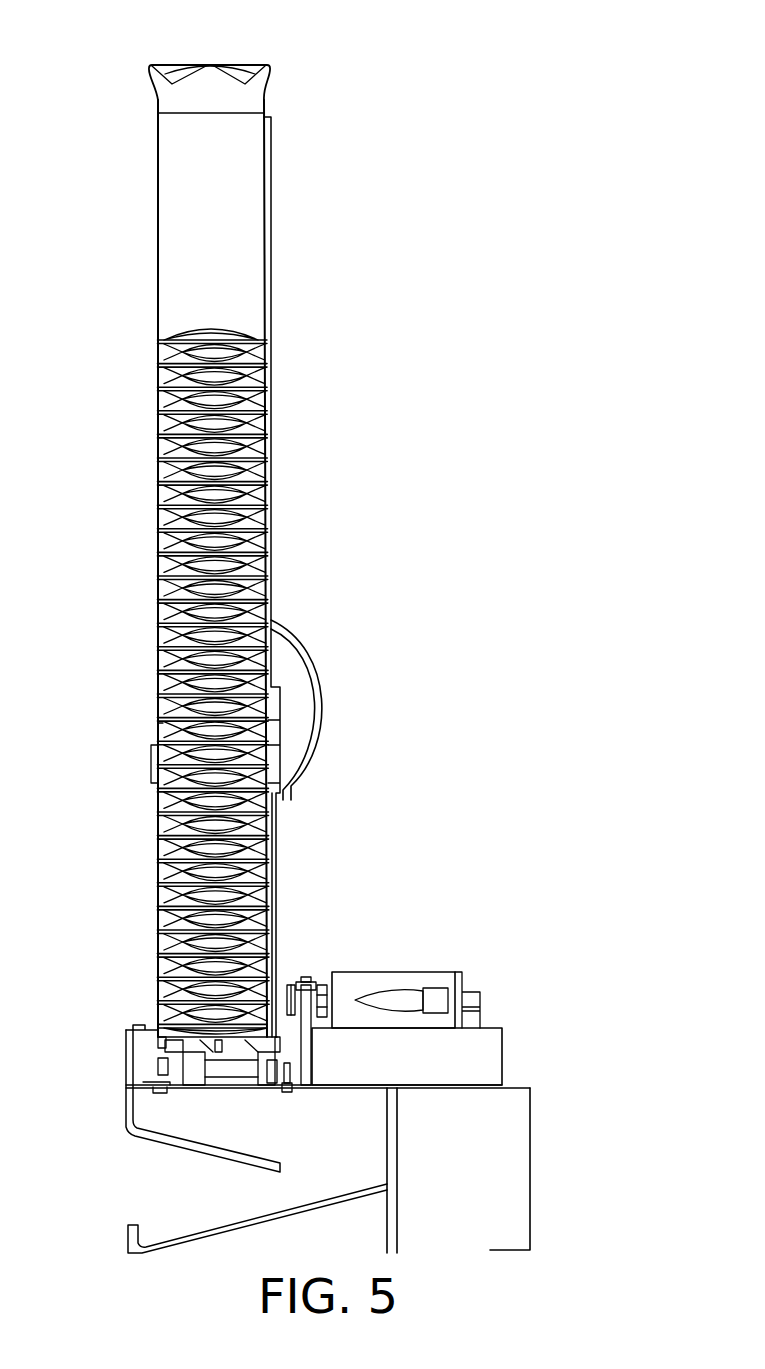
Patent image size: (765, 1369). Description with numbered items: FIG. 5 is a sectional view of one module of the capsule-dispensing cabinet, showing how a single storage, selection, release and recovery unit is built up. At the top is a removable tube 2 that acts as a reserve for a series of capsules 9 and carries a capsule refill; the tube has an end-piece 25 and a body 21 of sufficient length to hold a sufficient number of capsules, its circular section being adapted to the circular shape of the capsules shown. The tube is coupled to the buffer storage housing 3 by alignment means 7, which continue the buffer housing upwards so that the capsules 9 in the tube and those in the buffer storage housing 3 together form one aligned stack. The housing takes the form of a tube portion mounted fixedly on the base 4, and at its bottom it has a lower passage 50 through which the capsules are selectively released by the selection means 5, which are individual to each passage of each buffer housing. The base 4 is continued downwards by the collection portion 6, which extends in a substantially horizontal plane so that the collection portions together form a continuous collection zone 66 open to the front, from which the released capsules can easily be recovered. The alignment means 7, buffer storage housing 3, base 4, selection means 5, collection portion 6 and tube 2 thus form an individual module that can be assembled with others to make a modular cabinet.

The removable tube 2 is at (150, 244).
The end-piece 25 is at (217, 66).
The body 21 is at (256, 216).
The capsules 9 is at (163, 512).
The buffer storage housing 3 is at (158, 852).
The alignment means 7 is at (358, 667).
The lower passage 50 is at (207, 1055).
The selection means 5 is at (486, 973).
The base 4 is at (508, 1053).
The collection portion 6 is at (538, 1170).
The collection zone 66 is at (147, 1184).